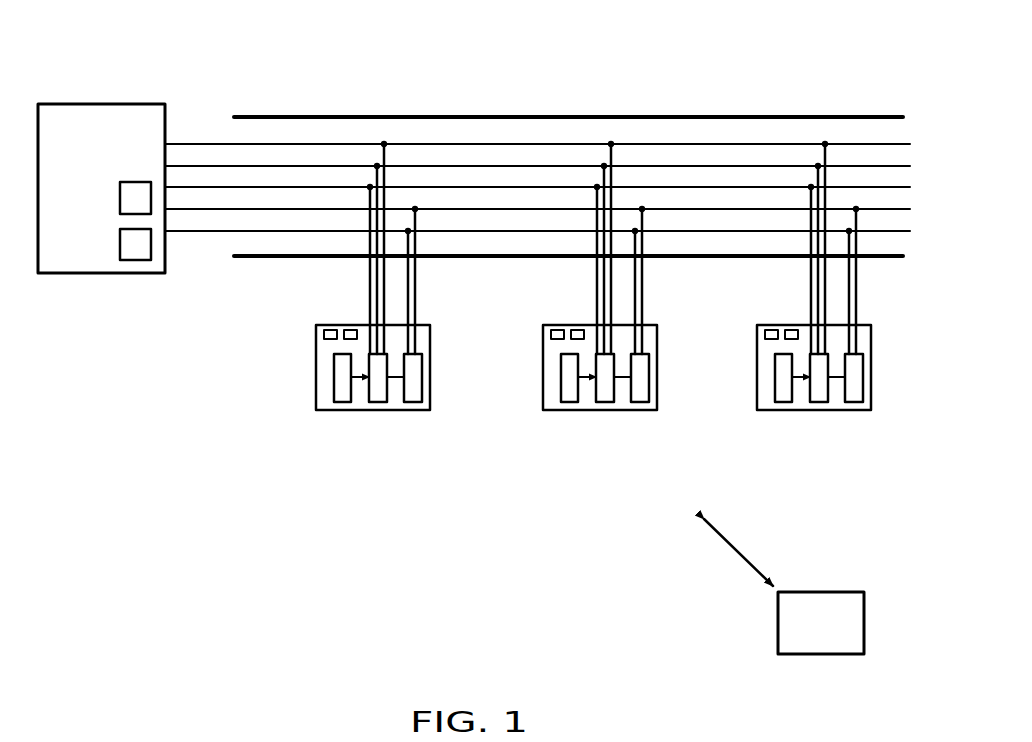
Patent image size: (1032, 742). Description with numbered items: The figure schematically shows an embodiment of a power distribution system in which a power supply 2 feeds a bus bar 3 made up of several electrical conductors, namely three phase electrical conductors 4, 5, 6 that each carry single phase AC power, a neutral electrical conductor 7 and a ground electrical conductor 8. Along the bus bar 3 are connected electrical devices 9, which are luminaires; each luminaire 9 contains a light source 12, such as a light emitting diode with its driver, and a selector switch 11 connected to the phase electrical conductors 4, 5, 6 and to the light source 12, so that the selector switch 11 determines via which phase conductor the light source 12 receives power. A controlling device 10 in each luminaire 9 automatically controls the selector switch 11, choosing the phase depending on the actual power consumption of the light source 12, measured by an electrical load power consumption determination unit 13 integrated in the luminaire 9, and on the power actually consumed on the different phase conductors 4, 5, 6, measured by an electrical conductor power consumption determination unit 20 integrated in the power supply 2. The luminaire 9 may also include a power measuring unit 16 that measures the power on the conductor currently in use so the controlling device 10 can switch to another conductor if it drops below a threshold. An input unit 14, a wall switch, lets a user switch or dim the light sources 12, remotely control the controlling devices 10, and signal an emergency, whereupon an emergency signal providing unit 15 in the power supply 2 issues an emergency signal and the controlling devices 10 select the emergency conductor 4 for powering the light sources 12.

The power supply 2 is at (102, 103).
The bus bar 3 is at (868, 115).
The phase electrical conductor 4 is at (197, 143).
The phase electrical conductor 5 is at (220, 165).
The phase electrical conductor 6 is at (190, 188).
The neutral electrical conductor 7 is at (208, 211).
The ground electrical conductor 8 is at (227, 232).
The electrical device 9 is at (339, 412).
The controlling device 10 is at (334, 368).
The selector switch 11 is at (373, 403).
The light source 12 is at (414, 403).
The electrical load power consumption determination unit 13 is at (328, 323).
The input unit 14 is at (828, 655).
The emergency signal providing unit 15 is at (135, 182).
The power measuring unit 16 is at (351, 325).
The electrical conductor power consumption determination unit 20 is at (125, 261).